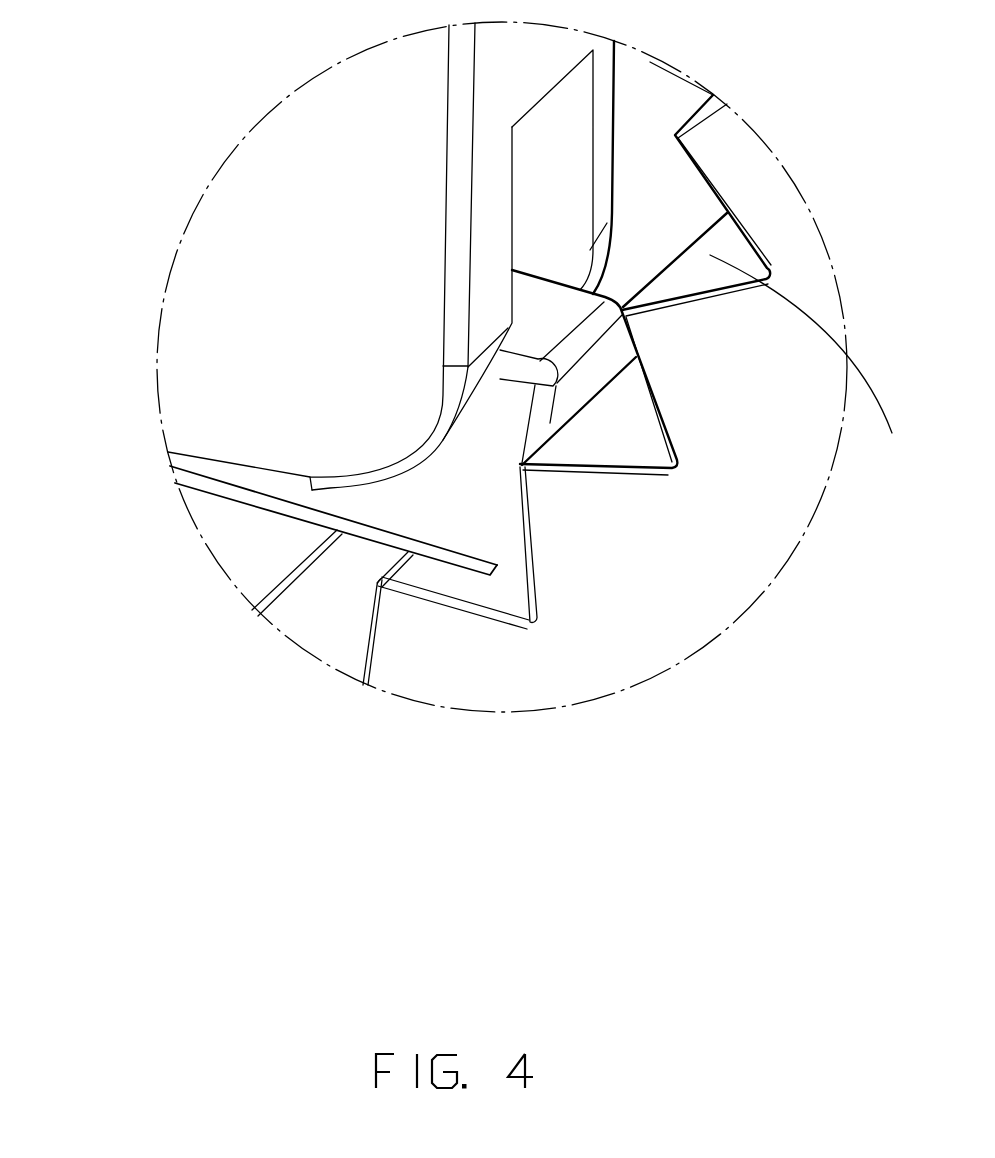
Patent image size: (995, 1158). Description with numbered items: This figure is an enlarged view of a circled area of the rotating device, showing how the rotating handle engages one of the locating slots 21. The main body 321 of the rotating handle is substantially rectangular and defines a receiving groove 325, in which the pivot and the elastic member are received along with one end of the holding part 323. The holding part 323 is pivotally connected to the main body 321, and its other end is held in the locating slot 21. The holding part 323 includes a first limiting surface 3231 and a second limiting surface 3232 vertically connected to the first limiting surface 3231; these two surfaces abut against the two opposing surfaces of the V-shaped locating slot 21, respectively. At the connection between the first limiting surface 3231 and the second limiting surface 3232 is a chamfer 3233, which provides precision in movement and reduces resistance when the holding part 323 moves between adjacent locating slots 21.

The locating slot 21 is at (640, 438).
The main body 321 is at (333, 150).
The holding part 323 is at (430, 507).
The receiving groove 325 is at (555, 180).
The first limiting surface 3231 is at (563, 378).
The second limiting surface 3232 is at (370, 533).
The chamfer 3233 is at (520, 468).